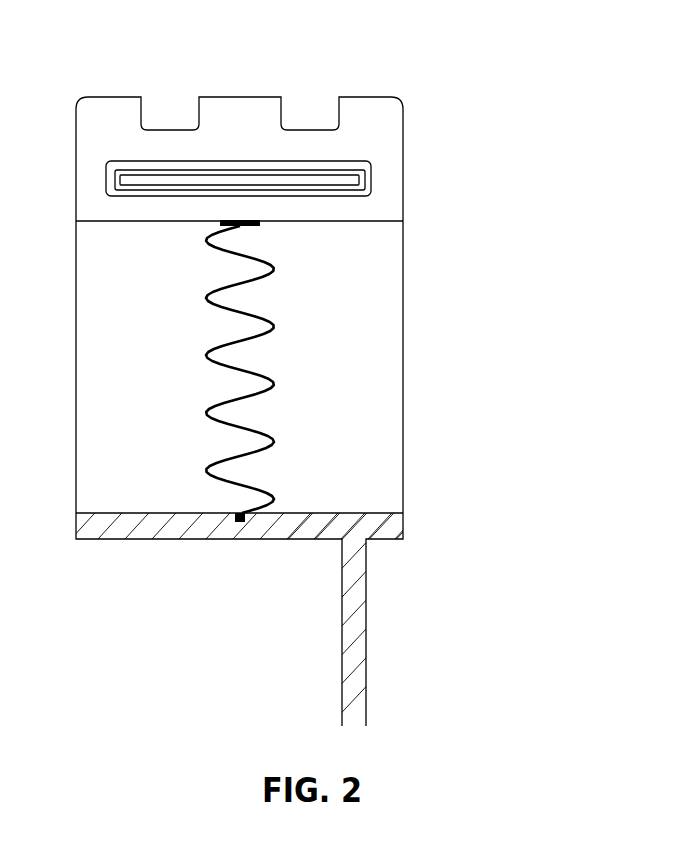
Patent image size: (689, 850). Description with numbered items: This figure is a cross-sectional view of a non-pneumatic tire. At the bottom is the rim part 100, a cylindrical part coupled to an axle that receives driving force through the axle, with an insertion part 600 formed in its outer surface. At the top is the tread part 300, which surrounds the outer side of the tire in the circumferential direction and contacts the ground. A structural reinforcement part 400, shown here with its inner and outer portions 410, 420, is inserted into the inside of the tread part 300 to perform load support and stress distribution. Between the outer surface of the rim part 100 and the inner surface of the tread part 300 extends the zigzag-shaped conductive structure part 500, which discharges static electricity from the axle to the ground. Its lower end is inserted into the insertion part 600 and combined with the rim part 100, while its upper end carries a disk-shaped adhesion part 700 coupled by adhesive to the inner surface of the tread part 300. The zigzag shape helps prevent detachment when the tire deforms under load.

The rim part 100 is at (396, 521).
The tread part 300 is at (238, 105).
The structural reinforcement part 400 is at (324, 174).
The outer window frame 410 is at (368, 170).
The inner window 420 is at (366, 188).
The conductive structure part 500 is at (268, 378).
The insertion part 600 is at (240, 522).
The adhesion part 700 is at (250, 228).